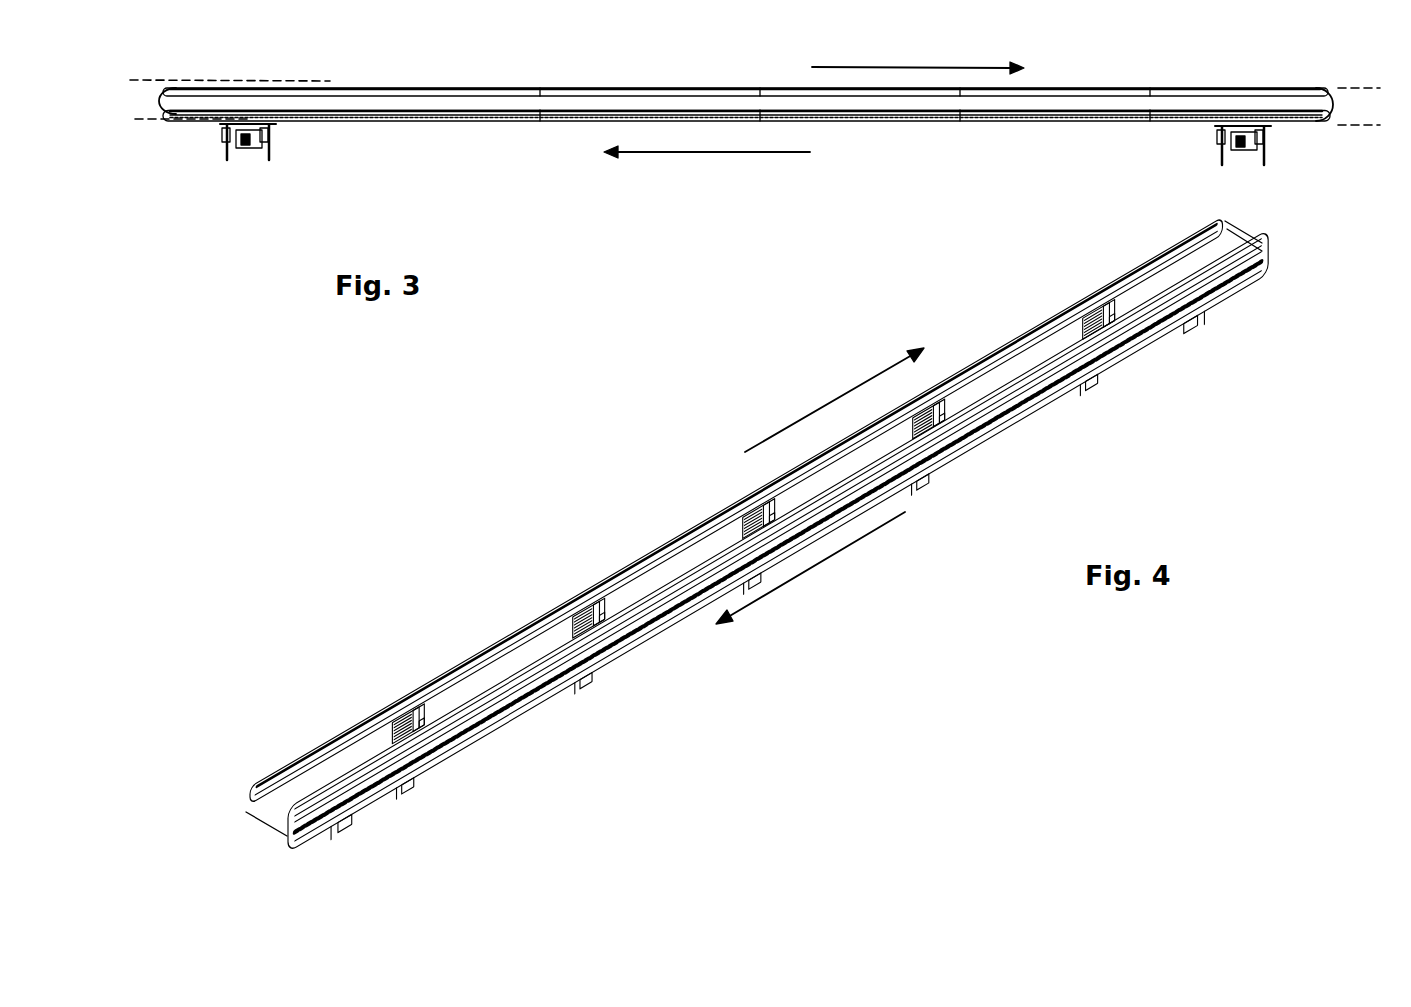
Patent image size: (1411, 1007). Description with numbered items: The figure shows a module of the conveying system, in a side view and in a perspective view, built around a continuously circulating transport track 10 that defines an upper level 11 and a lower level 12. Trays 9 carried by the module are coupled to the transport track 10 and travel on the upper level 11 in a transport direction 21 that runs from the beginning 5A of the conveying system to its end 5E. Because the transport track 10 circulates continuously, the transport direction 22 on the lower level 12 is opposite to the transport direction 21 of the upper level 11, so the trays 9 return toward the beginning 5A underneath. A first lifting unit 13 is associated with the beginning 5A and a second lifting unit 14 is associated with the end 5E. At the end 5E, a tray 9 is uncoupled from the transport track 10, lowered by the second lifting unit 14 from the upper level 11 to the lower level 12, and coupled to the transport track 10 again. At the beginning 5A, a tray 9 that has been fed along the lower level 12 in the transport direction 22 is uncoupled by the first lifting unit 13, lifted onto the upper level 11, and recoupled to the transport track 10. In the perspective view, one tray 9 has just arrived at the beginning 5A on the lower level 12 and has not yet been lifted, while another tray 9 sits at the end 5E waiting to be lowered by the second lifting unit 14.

In FIG. 4, the tray 9 is at (1113, 292).
In FIG. 3, the transport track 10 is at (552, 120).
In FIG. 4, the transport track 10 is at (250, 790).
In FIG. 3, the upper level 11 is at (154, 80).
In FIG. 3, the lower level 12 is at (155, 121).
In FIG. 3, the first lifting unit 13 is at (273, 138).
In FIG. 4, the first lifting unit 13 is at (352, 818).
In FIG. 3, the second lifting unit 14 is at (1243, 153).
In FIG. 4, the second lifting unit 14 is at (1188, 323).
In FIG. 3, the transport direction 21 is at (890, 67).
In FIG. 4, the transport direction 21 is at (847, 393).
In FIG. 3, the transport direction 22 is at (727, 153).
In FIG. 4, the transport direction 22 is at (850, 545).
In FIG. 3, the beginning of the conveying system 5A is at (143, 99).
In FIG. 4, the beginning of the conveying system 5A is at (243, 820).
In FIG. 3, the end of the conveying system 5E is at (1362, 104).
In FIG. 4, the end of the conveying system 5E is at (1278, 226).